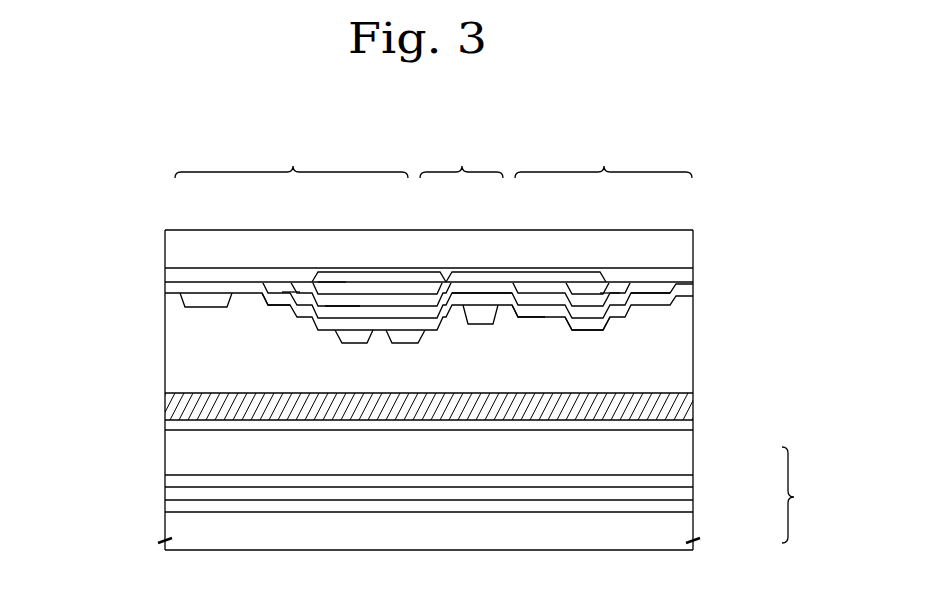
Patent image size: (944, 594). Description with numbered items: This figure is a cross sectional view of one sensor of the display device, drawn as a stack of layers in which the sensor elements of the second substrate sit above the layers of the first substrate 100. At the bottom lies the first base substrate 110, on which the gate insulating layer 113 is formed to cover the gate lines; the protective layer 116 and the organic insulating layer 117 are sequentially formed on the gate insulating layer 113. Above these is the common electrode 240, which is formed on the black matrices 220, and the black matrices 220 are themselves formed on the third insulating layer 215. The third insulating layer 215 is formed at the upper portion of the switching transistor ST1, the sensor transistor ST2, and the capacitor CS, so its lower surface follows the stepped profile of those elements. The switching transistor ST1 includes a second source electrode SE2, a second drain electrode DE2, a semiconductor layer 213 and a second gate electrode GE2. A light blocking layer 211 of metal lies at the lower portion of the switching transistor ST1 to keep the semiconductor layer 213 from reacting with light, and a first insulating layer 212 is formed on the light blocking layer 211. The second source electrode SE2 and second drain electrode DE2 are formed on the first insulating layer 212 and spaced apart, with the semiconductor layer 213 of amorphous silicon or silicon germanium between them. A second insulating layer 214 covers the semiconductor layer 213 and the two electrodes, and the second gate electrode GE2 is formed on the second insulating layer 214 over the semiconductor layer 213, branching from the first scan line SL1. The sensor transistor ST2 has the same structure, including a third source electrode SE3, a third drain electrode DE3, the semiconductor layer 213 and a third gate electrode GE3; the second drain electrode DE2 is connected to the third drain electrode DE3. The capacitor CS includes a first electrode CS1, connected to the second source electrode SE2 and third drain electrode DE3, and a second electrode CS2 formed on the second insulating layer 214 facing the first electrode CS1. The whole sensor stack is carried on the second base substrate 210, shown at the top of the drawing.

The first substrate 100 is at (809, 495).
The first base substrate 110 is at (687, 533).
The gate insulating layer 113 is at (687, 507).
The protective layer 116 is at (687, 493).
The organic insulating layer 117 is at (695, 478).
The common electrode 240 is at (683, 428).
The black matrices 220 is at (683, 406).
The third insulating layer 215 is at (683, 352).
The second insulating layer 214 is at (683, 288).
The first insulating layer 212 is at (683, 276).
The second base substrate 210 is at (683, 250).
The semiconductor layer 213 is at (292, 292).
The light blocking layer 211 is at (333, 283).
The first scan line SL1 is at (193, 302).
The switching transistor ST1 is at (291, 158).
The sensor transistor ST2 is at (603, 158).
The capacitor CS is at (461, 158).
The first electrode CS1 is at (480, 288).
The second electrode CS2 is at (490, 313).
The second drain electrode DE2 is at (277, 285).
The second gate electrode GE2 is at (341, 300).
The second source electrode SE2 is at (383, 325).
The third drain electrode DE3 is at (533, 302).
The third gate electrode GE3 is at (570, 313).
The third source electrode SE3 is at (650, 287).